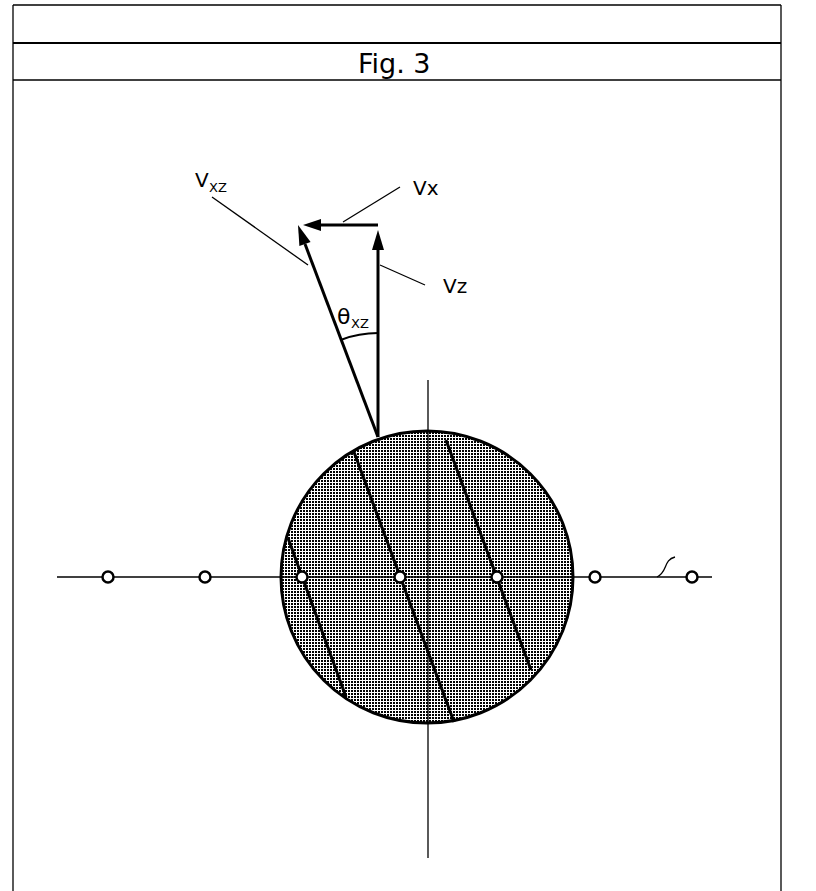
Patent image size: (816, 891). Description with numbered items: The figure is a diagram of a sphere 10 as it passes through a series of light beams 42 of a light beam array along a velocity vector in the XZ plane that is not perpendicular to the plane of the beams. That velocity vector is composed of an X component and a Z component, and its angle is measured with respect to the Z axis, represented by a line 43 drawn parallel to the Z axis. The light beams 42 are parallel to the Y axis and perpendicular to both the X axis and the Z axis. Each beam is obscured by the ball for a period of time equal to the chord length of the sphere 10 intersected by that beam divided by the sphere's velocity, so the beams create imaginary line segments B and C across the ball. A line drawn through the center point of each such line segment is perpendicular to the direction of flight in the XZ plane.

The sphere 10 is at (444, 614).
The light beams 42 is at (203, 570).
The line parallel to the Z axis 43 is at (428, 760).
The line segment B is at (407, 600).
The line segment C is at (528, 647).